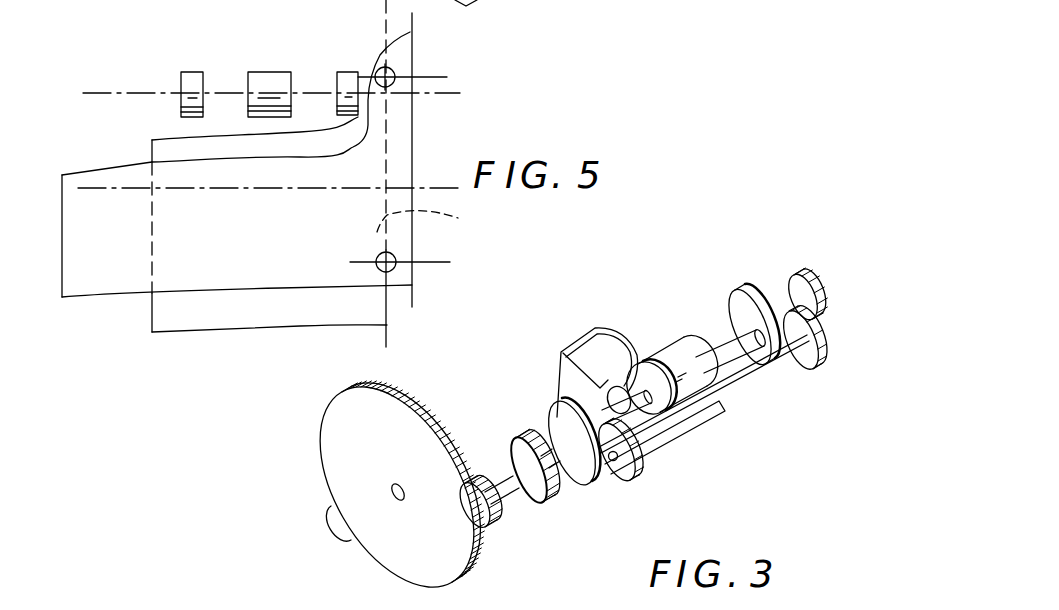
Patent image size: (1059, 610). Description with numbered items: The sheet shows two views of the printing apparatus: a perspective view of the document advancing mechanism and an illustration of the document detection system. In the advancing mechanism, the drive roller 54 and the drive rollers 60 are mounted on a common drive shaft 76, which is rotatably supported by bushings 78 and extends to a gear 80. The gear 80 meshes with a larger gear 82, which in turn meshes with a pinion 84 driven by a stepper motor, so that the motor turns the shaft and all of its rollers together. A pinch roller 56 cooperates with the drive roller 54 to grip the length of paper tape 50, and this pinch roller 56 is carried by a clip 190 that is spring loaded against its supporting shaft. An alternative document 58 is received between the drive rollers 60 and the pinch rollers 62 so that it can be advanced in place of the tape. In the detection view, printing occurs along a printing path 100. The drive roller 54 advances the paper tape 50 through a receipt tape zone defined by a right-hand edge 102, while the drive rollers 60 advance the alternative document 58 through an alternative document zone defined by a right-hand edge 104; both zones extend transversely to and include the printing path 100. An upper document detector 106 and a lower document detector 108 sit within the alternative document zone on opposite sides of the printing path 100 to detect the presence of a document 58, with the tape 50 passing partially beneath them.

In FIG. 5, the length of paper tape 50 is at (207, 313).
In FIG. 5, the drive roller 54 is at (260, 80).
In FIG. 3, the drive roller 54 is at (688, 347).
In FIG. 3, the pinch roller 56 is at (615, 393).
In FIG. 5, the alternative document 58 is at (120, 277).
In FIG. 5, the drive rollers 60 is at (185, 80).
In FIG. 3, the drive rollers 60 is at (565, 422).
In FIG. 3, the pinch rollers 62 is at (640, 470).
In FIG. 3, the drive shaft 76 is at (507, 482).
In FIG. 3, the bushings 78 is at (530, 442).
In FIG. 3, the gear 80 is at (485, 522).
In FIG. 3, the gear 82 is at (350, 438).
In FIG. 3, the pinion 84 is at (340, 532).
In FIG. 5, the printing path 100 is at (272, 190).
In FIG. 5, the right-hand edge 102 is at (438, 219).
In FIG. 5, the right-hand edge 104 is at (400, 149).
In FIG. 5, the upper document detector 106 is at (394, 72).
In FIG. 5, the lower document detector 108 is at (395, 268).
In FIG. 3, the clip 190 is at (562, 348).